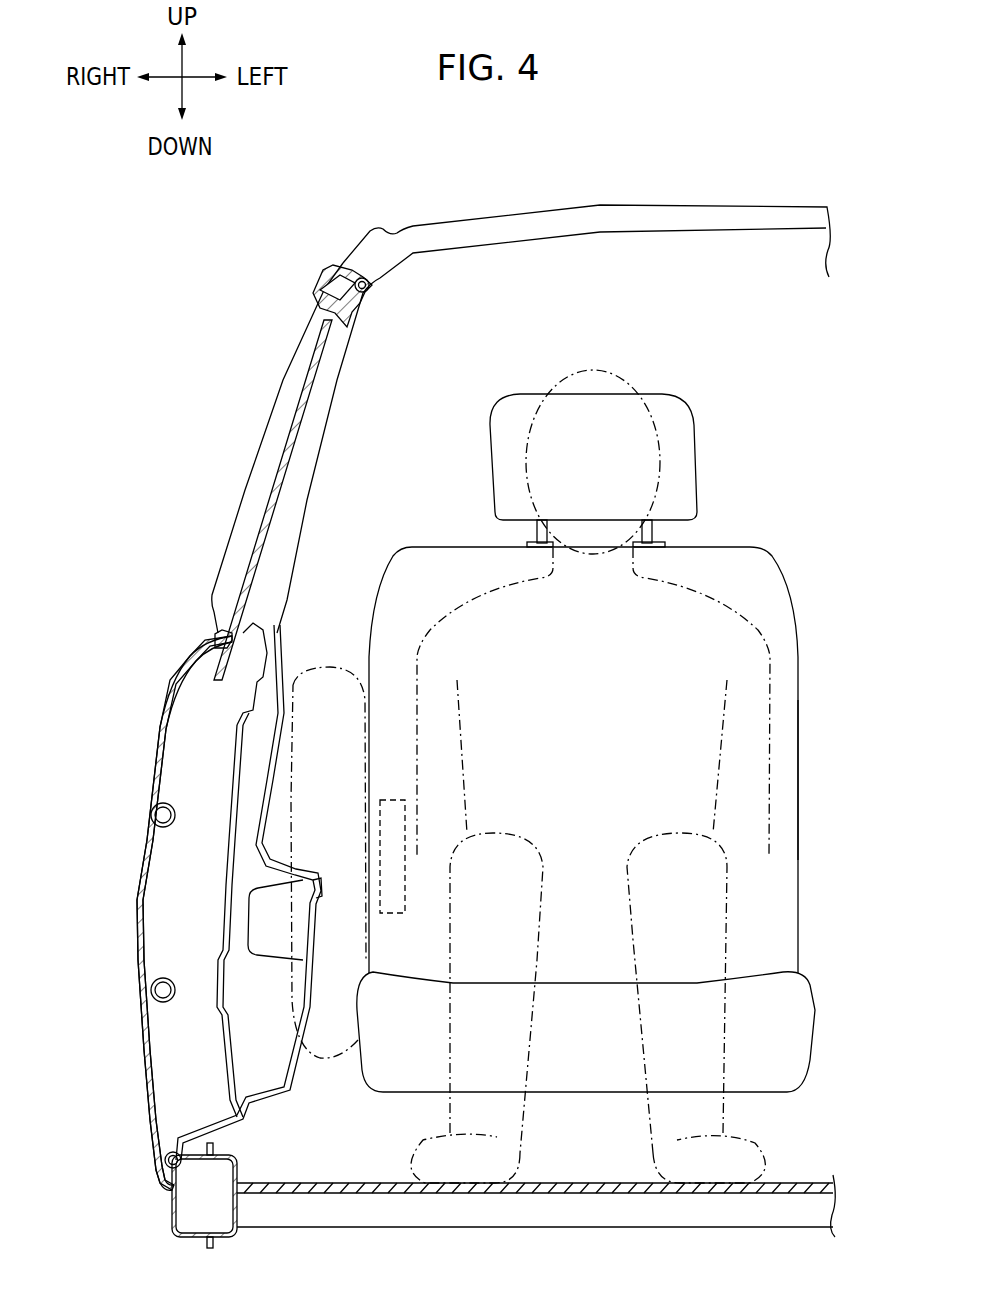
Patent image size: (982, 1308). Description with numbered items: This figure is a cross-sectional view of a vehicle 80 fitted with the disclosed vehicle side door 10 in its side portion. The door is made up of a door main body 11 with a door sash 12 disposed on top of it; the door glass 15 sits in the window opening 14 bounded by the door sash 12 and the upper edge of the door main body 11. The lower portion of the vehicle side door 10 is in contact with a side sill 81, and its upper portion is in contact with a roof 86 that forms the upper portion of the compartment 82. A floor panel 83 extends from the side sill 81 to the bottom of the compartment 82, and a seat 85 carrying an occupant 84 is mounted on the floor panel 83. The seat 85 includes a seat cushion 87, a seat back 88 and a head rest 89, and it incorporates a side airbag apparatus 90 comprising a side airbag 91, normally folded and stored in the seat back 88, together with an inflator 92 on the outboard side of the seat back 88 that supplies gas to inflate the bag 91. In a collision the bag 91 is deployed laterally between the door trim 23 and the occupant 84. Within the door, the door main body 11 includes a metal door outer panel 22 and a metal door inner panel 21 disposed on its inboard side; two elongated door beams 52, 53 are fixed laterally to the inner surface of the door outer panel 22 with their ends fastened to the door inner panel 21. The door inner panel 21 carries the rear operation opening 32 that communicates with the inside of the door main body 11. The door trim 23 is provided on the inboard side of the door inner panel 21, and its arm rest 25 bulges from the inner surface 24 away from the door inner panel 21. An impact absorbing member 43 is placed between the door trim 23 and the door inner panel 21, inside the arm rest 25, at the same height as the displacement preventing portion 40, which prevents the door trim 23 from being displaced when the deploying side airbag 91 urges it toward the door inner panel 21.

The vehicle side door 10 is at (150, 603).
The door main body 11 is at (173, 660).
The door sash 12 is at (340, 268).
The window opening 14 is at (208, 600).
The door glass 15 is at (275, 463).
The door inner panel 21 is at (227, 1053).
The door outer panel 22 is at (143, 1100).
The door trim 23 is at (326, 1060).
The inner surface 24 is at (279, 790).
The arm rest 25 is at (330, 877).
The rear operation opening 32 is at (238, 722).
The displacement preventing portion 40 is at (247, 900).
The impact absorbing member 43 is at (300, 876).
The door beam 52 is at (152, 825).
The door beam 53 is at (150, 1000).
The vehicle 80 is at (362, 199).
The side sill 81 is at (172, 1215).
The compartment 82 is at (622, 318).
The floor panel 83 is at (800, 1177).
The occupant 84 is at (500, 580).
The seat 85 is at (787, 565).
The roof 86 is at (655, 203).
The seat cushion 87 is at (813, 1010).
The seat back 88 is at (808, 780).
The head rest 89 is at (687, 447).
The side airbag apparatus 90 is at (302, 550).
The side airbag 91 is at (333, 660).
The inflator 92 is at (380, 800).